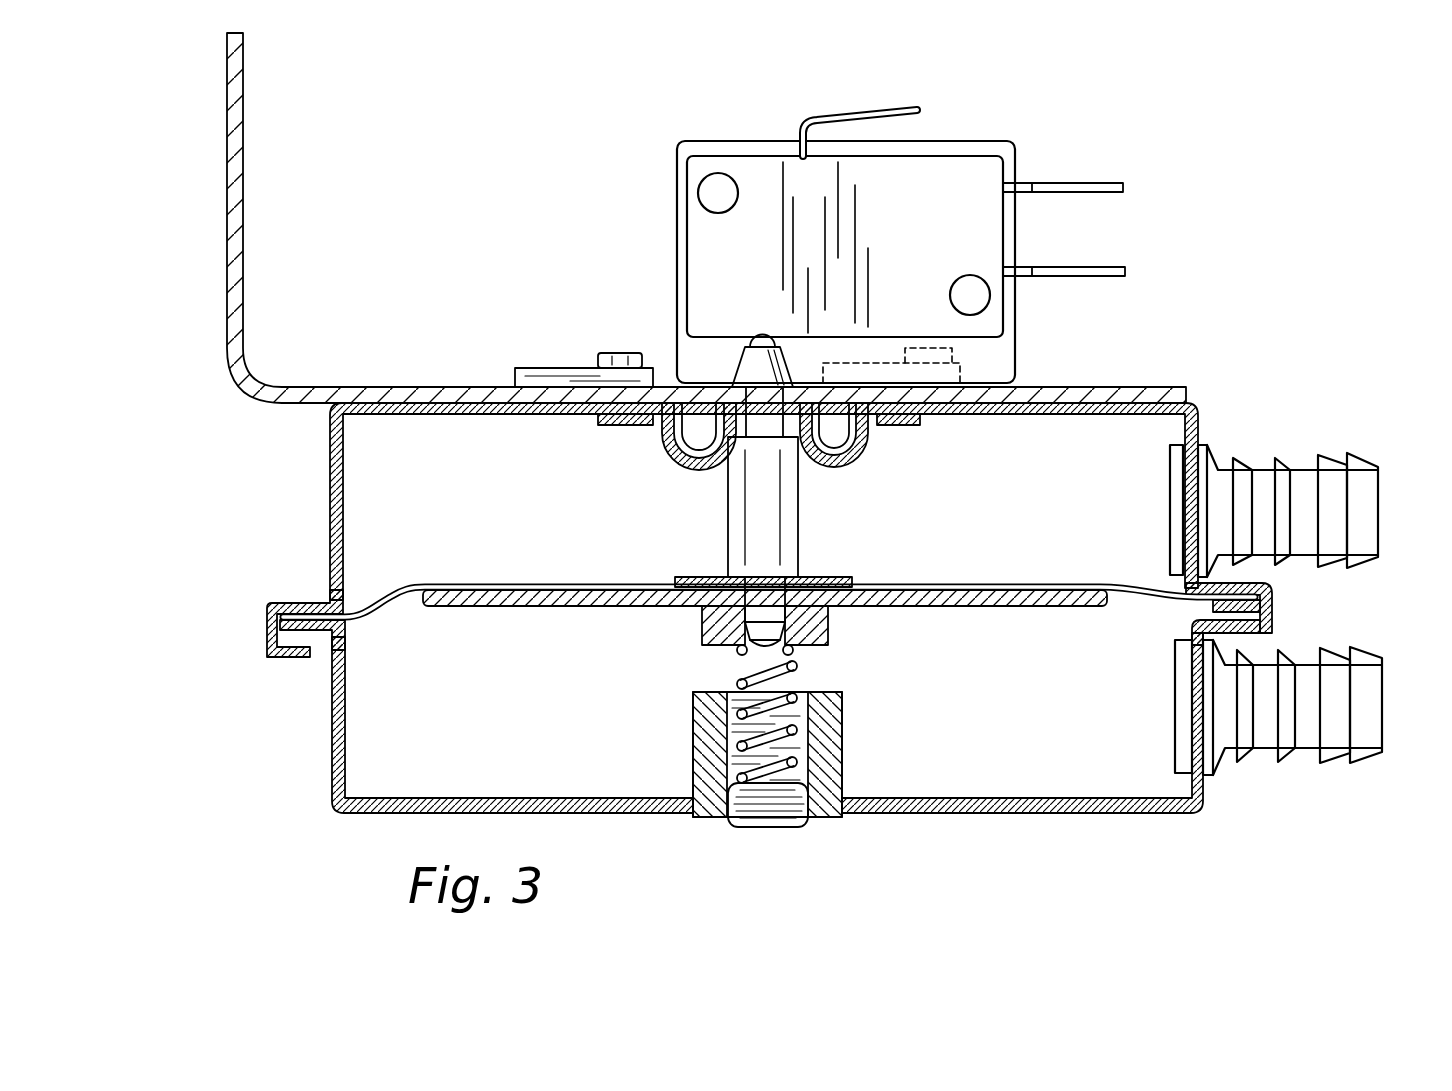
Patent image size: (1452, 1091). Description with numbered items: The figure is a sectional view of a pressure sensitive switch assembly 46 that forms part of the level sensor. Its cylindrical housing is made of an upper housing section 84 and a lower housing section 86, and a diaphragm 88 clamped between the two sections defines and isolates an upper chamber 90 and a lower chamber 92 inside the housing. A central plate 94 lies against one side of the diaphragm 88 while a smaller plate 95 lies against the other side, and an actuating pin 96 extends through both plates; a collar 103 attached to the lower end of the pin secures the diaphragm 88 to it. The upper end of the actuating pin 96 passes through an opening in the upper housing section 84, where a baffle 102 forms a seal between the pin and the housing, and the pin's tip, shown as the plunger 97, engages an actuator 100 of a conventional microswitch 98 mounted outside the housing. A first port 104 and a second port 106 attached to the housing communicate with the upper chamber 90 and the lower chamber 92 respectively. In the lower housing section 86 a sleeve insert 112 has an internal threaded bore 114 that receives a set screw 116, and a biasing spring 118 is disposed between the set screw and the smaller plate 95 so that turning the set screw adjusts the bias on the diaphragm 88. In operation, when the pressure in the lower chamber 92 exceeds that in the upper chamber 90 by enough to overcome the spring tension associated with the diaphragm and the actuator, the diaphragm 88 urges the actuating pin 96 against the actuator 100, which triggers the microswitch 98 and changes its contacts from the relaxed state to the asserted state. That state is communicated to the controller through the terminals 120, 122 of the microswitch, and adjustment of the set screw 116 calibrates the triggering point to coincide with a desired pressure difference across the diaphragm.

The pressure switch assembly 46 is at (1200, 351).
The upper housing section 84 is at (330, 520).
The lower housing section 86 is at (335, 755).
The diaphragm 88 is at (1050, 582).
The upper chamber 90 is at (1047, 488).
The lower chamber 92 is at (1089, 716).
The central plate 94 is at (570, 606).
The smaller plate 95 is at (840, 577).
The actuating pin 96 is at (752, 517).
The plunger 97 is at (745, 368).
The microswitch 98 is at (852, 250).
The actuator 100 is at (763, 338).
The baffle 102 is at (873, 440).
The collar 103 is at (828, 623).
The first port 104 is at (1335, 483).
The second port 106 is at (1363, 678).
The sleeve insert 112 is at (832, 755).
The internal threaded bore 114 is at (795, 738).
The set screw 116 is at (770, 812).
The biasing spring 118 is at (738, 672).
The terminal 120 is at (1080, 178).
The terminal 122 is at (1092, 266).